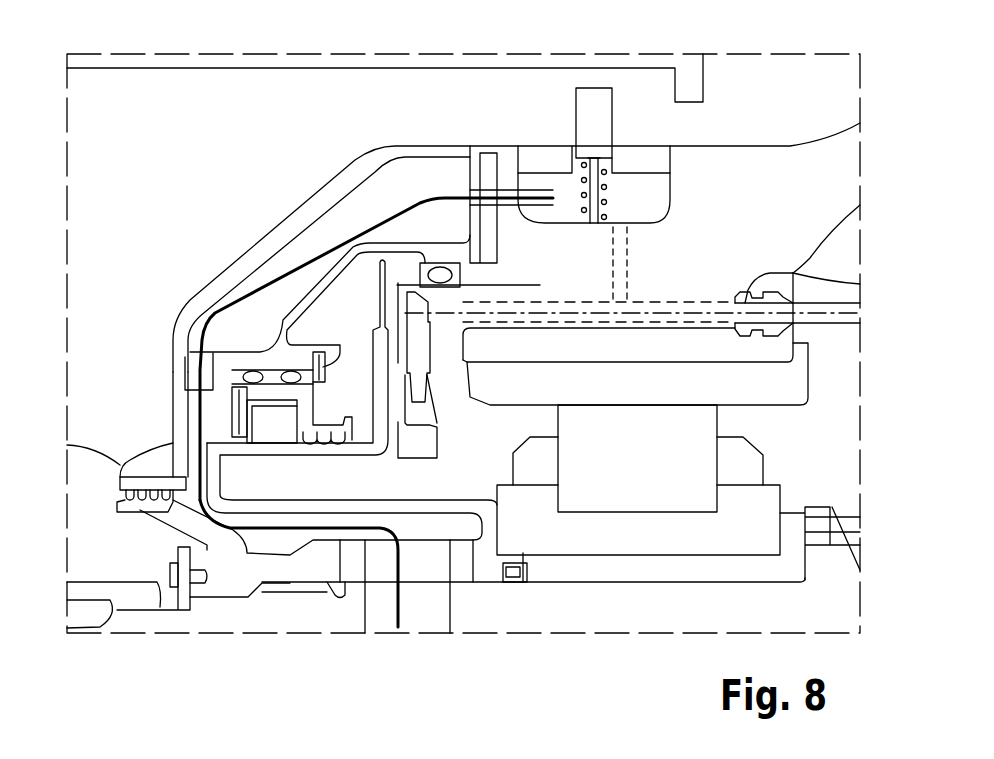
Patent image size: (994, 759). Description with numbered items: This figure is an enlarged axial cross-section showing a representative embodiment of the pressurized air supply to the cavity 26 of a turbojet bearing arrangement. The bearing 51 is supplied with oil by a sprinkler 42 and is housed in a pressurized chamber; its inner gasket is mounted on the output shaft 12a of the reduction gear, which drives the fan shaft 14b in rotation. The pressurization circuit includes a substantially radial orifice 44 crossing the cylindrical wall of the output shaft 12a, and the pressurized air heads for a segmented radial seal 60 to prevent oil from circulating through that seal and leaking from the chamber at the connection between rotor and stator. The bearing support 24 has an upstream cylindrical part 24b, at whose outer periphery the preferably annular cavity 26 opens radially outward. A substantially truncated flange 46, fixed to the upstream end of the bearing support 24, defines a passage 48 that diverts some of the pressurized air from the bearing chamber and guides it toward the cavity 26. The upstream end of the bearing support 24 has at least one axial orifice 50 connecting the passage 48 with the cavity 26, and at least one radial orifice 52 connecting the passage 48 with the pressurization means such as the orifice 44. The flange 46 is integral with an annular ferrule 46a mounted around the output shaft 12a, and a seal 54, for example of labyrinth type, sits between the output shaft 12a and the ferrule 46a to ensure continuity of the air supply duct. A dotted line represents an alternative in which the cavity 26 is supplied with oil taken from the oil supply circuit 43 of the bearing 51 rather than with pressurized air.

The output shaft 12a is at (658, 572).
The fan shaft 14b is at (133, 597).
The bearing support 24 is at (880, 193).
The upstream cylindrical part 24b is at (875, 282).
The cavity 26 is at (643, 193).
The sprinkler 42 is at (423, 440).
The oil supply circuit 43 is at (620, 292).
The orifice 44 is at (423, 567).
The flange 46 is at (197, 310).
The annular ferrule 46a is at (140, 470).
The passage 48 is at (267, 267).
The axial orifice 50 is at (490, 193).
The bearing 51 is at (777, 442).
The radial orifice 52 is at (197, 377).
The seal 54 is at (142, 507).
The segmented radial seal 60 is at (270, 432).